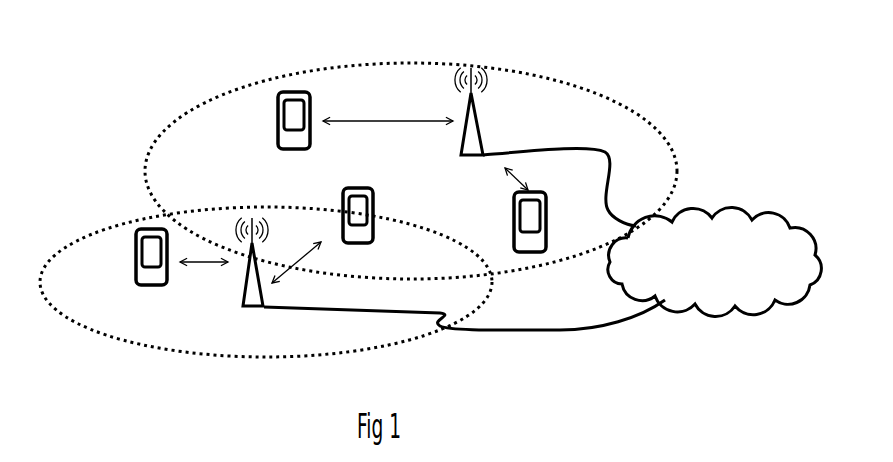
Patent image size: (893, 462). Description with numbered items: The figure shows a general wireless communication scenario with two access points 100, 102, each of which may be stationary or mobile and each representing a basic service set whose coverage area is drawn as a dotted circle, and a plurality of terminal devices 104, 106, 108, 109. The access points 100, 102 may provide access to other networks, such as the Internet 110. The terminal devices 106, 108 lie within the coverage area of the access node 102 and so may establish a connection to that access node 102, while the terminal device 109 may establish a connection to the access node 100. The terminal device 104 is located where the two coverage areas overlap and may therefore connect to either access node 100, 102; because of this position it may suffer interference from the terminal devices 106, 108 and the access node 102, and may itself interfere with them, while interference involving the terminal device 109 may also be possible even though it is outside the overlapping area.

The access point 100 is at (243, 296).
The access point 102 is at (463, 141).
The terminal device 104 is at (344, 196).
The terminal device 106 is at (515, 203).
The terminal device 108 is at (279, 97).
The terminal device 109 is at (137, 242).
The Internet 110 is at (714, 262).